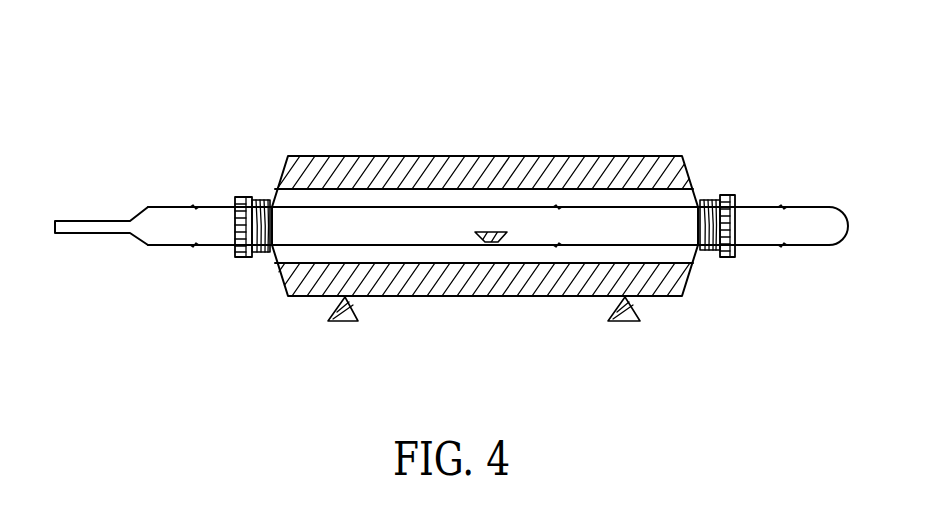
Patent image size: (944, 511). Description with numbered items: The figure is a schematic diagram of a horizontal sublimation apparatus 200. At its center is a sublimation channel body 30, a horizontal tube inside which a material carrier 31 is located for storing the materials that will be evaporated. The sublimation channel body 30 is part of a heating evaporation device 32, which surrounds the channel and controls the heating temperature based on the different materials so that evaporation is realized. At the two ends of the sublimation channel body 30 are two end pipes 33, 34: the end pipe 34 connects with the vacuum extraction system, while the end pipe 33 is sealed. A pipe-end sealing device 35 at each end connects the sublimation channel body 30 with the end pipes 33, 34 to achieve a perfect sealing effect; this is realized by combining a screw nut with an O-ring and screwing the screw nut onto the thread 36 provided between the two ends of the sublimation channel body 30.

The horizontal sublimation apparatus 200 is at (322, 42).
The sublimation channel body 30 is at (568, 224).
The material carrier 31 is at (496, 243).
The heating evaporation device 32 is at (467, 166).
The end pipe 33 is at (823, 218).
The end pipe 34 is at (164, 217).
The pipe-end sealing device 35 is at (233, 197).
The thread 36 is at (256, 200).